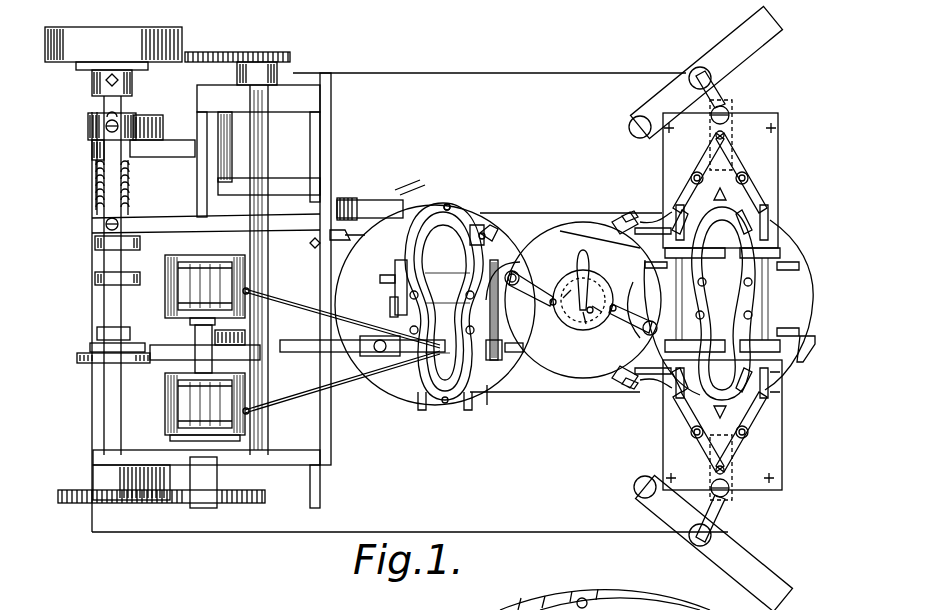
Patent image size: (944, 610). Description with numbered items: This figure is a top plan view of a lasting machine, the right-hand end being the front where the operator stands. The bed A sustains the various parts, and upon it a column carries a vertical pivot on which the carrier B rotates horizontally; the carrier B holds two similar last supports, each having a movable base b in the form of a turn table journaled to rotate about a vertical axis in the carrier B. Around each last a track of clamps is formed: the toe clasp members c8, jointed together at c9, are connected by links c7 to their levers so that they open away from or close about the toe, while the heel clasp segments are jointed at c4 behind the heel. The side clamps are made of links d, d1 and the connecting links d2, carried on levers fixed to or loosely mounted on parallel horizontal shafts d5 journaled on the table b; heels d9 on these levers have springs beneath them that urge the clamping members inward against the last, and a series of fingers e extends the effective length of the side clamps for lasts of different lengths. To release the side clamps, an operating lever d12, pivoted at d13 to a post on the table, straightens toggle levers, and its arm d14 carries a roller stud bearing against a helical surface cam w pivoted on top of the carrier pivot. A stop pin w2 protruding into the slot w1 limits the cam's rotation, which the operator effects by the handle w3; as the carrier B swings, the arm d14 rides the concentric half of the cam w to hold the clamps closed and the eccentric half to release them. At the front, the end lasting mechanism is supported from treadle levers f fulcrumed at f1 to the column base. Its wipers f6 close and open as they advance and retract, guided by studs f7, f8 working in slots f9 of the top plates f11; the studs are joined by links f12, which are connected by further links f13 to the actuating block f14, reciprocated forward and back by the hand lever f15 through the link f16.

The bed A is at (507, 463).
The carrier B is at (577, 372).
The movable base b is at (485, 409).
The fingers e is at (470, 248).
The link d is at (447, 275).
The link d1 is at (438, 356).
The connecting link d2 is at (447, 306).
The horizontal shaft d5 is at (404, 306).
The heel d9 is at (515, 250).
The operating lever d12 is at (503, 290).
The pivot d13 is at (518, 276).
The arm d14 is at (540, 296).
The joint c4 is at (445, 404).
The link c7 is at (487, 228).
The toe clasp member c8 is at (668, 598).
The joint c9 is at (447, 204).
The helical surface cam w is at (560, 320).
The slot w1 is at (600, 318).
The stop pin w2 is at (586, 318).
The handle w3 is at (586, 262).
The treadle lever f is at (645, 222).
The fulcrum f1 is at (625, 212).
The wiper f6 is at (719, 303).
The stud f7 is at (668, 398).
The stud f8 is at (688, 440).
The slot f9 is at (768, 374).
The top plate f11 is at (772, 178).
The link f12 is at (692, 180).
The link f13 is at (706, 155).
The actuating block f14 is at (730, 492).
The hand lever f15 is at (740, 38).
The link f16 is at (710, 90).